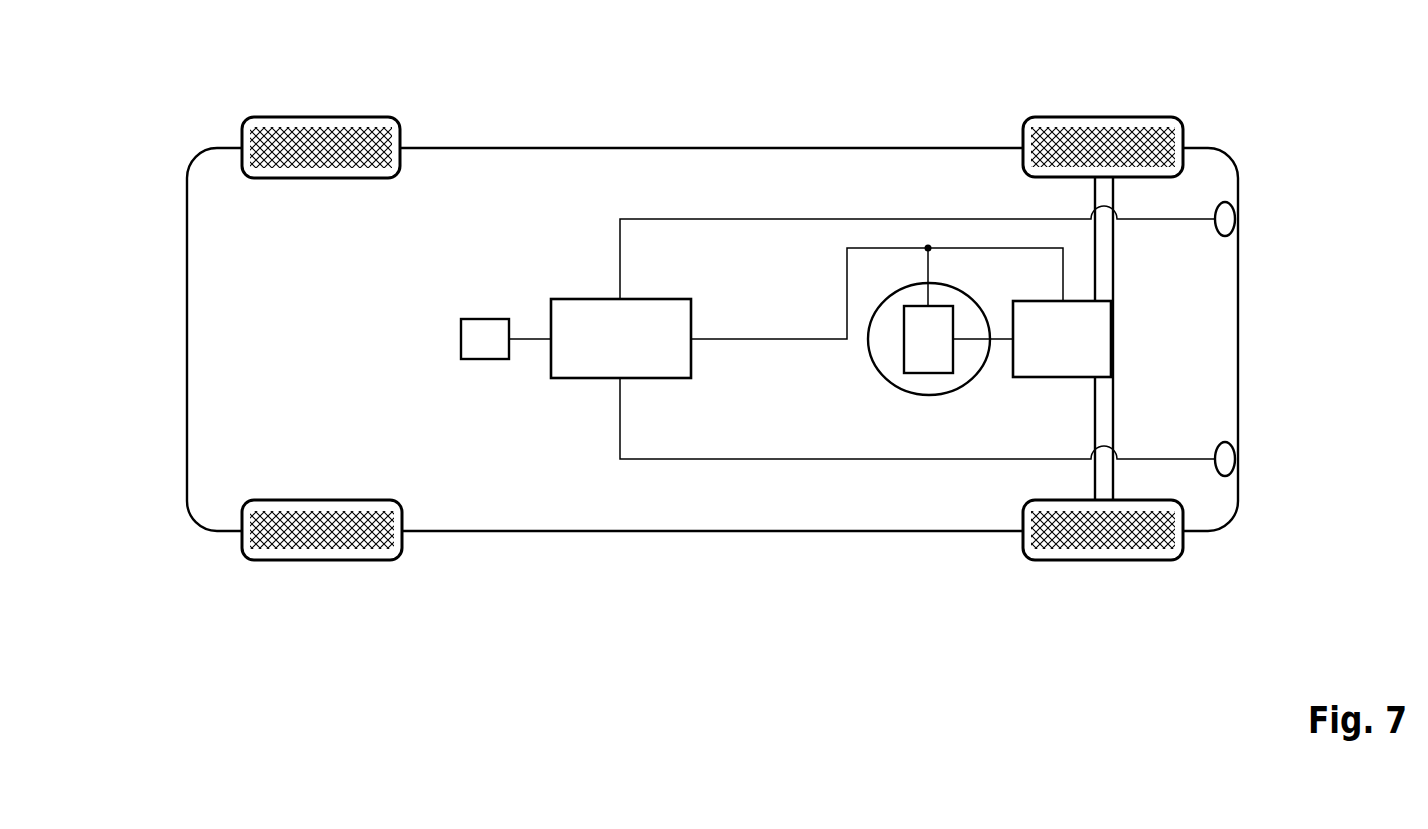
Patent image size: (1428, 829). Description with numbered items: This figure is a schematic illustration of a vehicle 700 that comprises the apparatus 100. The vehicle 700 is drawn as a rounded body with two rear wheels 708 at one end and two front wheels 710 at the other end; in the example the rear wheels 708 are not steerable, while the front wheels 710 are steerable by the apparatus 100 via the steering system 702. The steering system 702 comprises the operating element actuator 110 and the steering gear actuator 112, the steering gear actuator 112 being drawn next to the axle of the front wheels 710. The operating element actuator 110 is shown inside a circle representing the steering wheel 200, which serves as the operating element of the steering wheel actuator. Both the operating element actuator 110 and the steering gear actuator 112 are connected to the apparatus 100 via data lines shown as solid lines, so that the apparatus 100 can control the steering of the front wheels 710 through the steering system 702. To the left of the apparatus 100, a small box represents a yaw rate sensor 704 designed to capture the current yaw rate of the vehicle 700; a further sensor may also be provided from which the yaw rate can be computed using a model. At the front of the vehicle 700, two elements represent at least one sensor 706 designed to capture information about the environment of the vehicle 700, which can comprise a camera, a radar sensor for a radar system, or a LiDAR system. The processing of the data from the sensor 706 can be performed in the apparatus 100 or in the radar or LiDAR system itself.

The vehicle 700 is at (187, 341).
The steering system 702 is at (827, 176).
The yaw rate sensor 704 is at (461, 339).
The sensor 706 is at (1235, 220).
The rear wheels 708 is at (320, 117).
The front wheels 710 is at (1100, 117).
The apparatus 100 is at (643, 355).
The operating element actuator 110 is at (928, 352).
The steering gear actuator 112 is at (1087, 355).
The steering wheel 200 is at (973, 378).